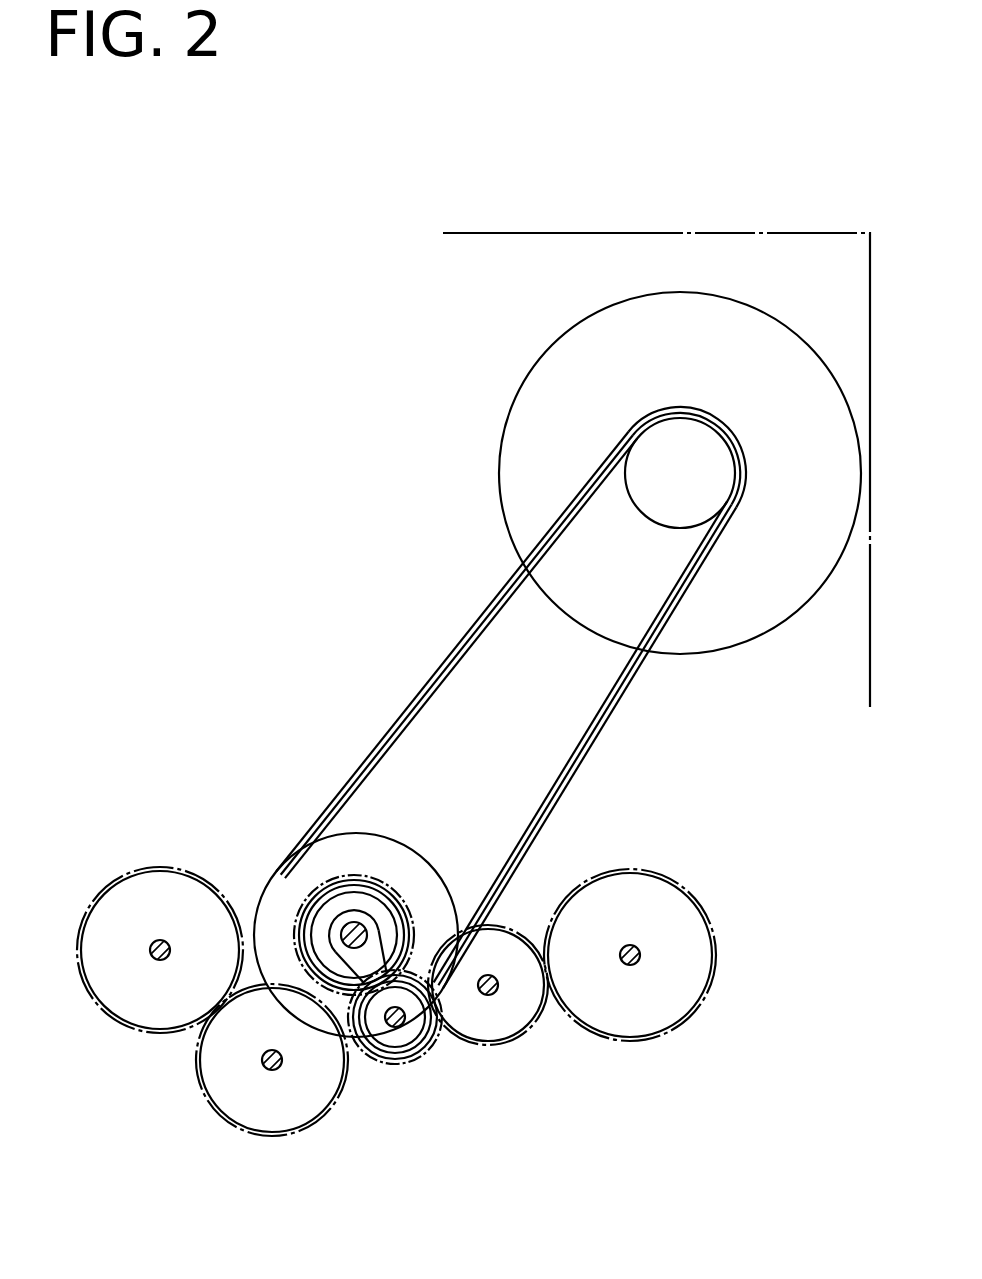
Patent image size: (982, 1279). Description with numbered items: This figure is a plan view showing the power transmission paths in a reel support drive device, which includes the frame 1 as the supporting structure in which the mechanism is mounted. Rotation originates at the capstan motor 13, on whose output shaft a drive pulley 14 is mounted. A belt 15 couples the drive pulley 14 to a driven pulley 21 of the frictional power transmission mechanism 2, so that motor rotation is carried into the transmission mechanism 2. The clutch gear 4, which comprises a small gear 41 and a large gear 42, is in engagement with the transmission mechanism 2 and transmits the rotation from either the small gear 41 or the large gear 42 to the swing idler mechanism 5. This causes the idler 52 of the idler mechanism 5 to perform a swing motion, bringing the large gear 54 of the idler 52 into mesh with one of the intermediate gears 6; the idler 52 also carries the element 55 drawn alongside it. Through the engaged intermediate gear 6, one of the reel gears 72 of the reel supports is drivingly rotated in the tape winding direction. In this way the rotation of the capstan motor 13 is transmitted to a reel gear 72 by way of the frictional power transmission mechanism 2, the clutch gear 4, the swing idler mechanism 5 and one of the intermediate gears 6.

The housing frame 1 is at (568, 233).
The capstan motor 13 is at (515, 442).
The drive pulley 14 is at (645, 446).
The belt 15 is at (448, 658).
The frictional power transmission mechanism 2 is at (302, 870).
The driven pulley 21 is at (413, 878).
The clutch gear 4 is at (318, 922).
The small gear 41 is at (395, 941).
The large gear 42 is at (382, 880).
The swing idler mechanism 5 is at (377, 958).
The idler 52 is at (402, 1040).
The large gear 54 is at (383, 1063).
The idler pulley rim 55 is at (422, 1040).
The intermediate gears 6 is at (292, 1110).
The reel gear 72 is at (183, 892).